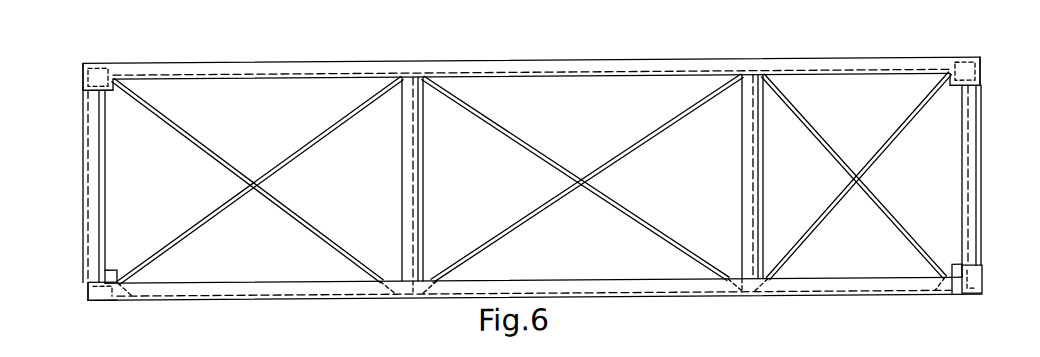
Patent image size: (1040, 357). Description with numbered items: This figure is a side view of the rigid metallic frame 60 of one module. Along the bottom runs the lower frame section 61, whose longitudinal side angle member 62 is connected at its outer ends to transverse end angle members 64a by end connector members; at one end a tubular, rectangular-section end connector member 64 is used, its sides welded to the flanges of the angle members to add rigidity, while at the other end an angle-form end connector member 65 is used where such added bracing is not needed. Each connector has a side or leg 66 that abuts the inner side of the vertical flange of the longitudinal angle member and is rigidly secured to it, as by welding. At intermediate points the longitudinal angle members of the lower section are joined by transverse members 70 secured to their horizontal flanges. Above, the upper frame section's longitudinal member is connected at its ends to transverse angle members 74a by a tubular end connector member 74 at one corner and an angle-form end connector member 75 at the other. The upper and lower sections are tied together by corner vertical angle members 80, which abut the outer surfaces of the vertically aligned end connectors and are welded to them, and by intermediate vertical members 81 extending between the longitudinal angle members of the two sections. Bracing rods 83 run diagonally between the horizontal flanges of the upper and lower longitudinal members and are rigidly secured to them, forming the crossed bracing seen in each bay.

The rigid metallic frame 60 is at (802, 34).
The lower frame section 61 is at (250, 306).
The longitudinal side angle member 62 is at (590, 296).
The end connector member 64 is at (960, 301).
The transverse end angle member 64a is at (94, 303).
The end connector member 65 is at (86, 286).
The side or leg of connector member 66 is at (112, 280).
The transverse member 70 is at (406, 300).
The end connector member 74 is at (972, 62).
The transverse angle member 74a is at (82, 72).
The end connector member 75 is at (106, 50).
The corner vertical angle member 80 is at (88, 149).
The intermediate vertical member 81 is at (415, 241).
The bracing rod 83 is at (212, 233).